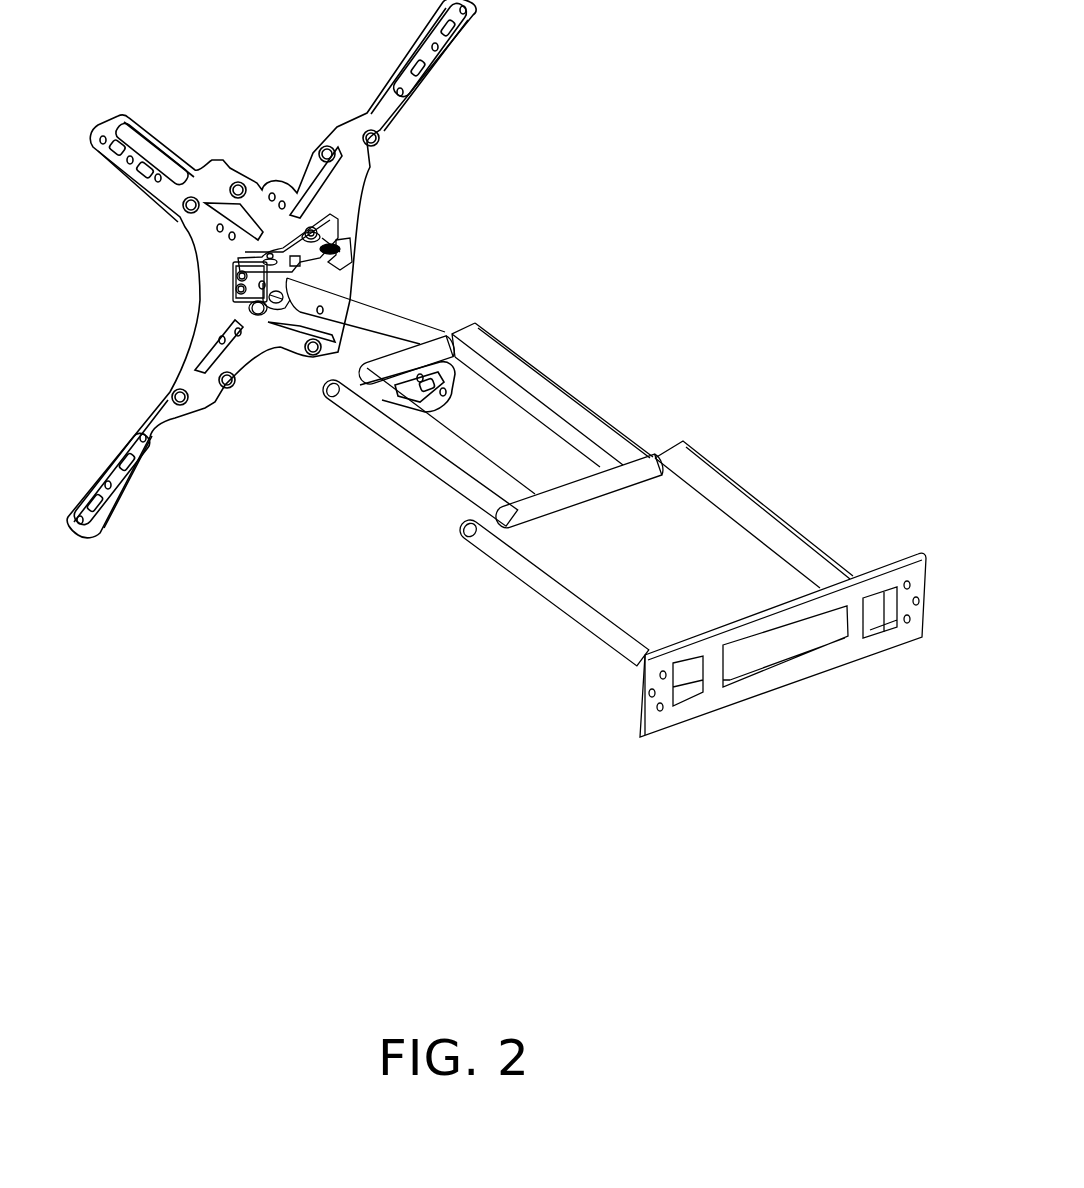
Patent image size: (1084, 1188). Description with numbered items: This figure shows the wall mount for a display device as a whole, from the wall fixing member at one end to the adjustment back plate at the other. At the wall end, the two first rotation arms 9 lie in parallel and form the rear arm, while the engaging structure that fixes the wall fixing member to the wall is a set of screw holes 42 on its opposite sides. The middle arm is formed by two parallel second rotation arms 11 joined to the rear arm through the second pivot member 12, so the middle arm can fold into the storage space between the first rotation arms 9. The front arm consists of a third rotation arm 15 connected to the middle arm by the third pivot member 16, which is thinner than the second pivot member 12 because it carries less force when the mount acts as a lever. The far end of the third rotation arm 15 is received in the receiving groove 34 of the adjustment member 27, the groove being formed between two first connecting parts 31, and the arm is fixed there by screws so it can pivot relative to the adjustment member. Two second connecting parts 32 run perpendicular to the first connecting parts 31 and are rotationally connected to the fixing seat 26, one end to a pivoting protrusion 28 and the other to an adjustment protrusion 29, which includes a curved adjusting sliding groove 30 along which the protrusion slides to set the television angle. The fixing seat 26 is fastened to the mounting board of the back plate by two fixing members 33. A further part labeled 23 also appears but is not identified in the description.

The first rotation arms 9 is at (583, 592).
The second rotation arms 11 is at (423, 437).
The second pivot member 12 is at (660, 466).
The third rotation arm 15 is at (383, 330).
The third pivot member 16 is at (450, 338).
The bracket 23 is at (345, 264).
The fixing seat 26 is at (230, 282).
The adjustment member 27 is at (259, 316).
The pivoting protrusion 28 is at (253, 257).
The adjustment protrusion 29 is at (338, 249).
The adjusting sliding groove 30 is at (322, 232).
The first connecting parts 31 is at (270, 295).
The second connecting parts 32 is at (270, 253).
The fixing members 33 is at (255, 285).
The receiving groove 34 is at (294, 254).
The screw holes 42 is at (644, 693).